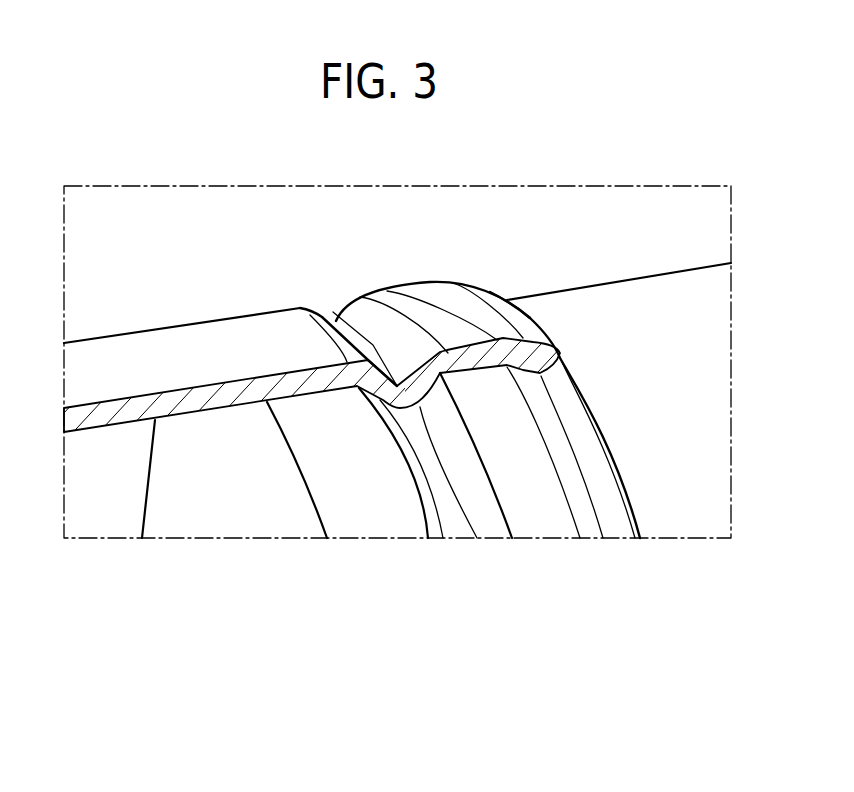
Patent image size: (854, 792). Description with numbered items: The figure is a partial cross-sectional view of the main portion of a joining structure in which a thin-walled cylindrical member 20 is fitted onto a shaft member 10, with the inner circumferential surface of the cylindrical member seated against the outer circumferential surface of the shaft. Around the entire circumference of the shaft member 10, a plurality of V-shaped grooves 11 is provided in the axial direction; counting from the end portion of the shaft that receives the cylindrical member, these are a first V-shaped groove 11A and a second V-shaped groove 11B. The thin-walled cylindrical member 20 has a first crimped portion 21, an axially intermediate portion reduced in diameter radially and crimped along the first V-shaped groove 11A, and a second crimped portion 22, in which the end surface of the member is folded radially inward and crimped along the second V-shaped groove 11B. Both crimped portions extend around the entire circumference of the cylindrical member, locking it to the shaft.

The shaft member 10 is at (655, 293).
The thin-walled cylindrical member 20 is at (183, 337).
The first crimped portion 21 is at (323, 304).
The second crimped portion 22 is at (507, 293).
The V-shaped grooves 11 is at (725, 610).
The first V-shaped groove 11A is at (453, 503).
The second V-shaped groove 11B is at (605, 497).